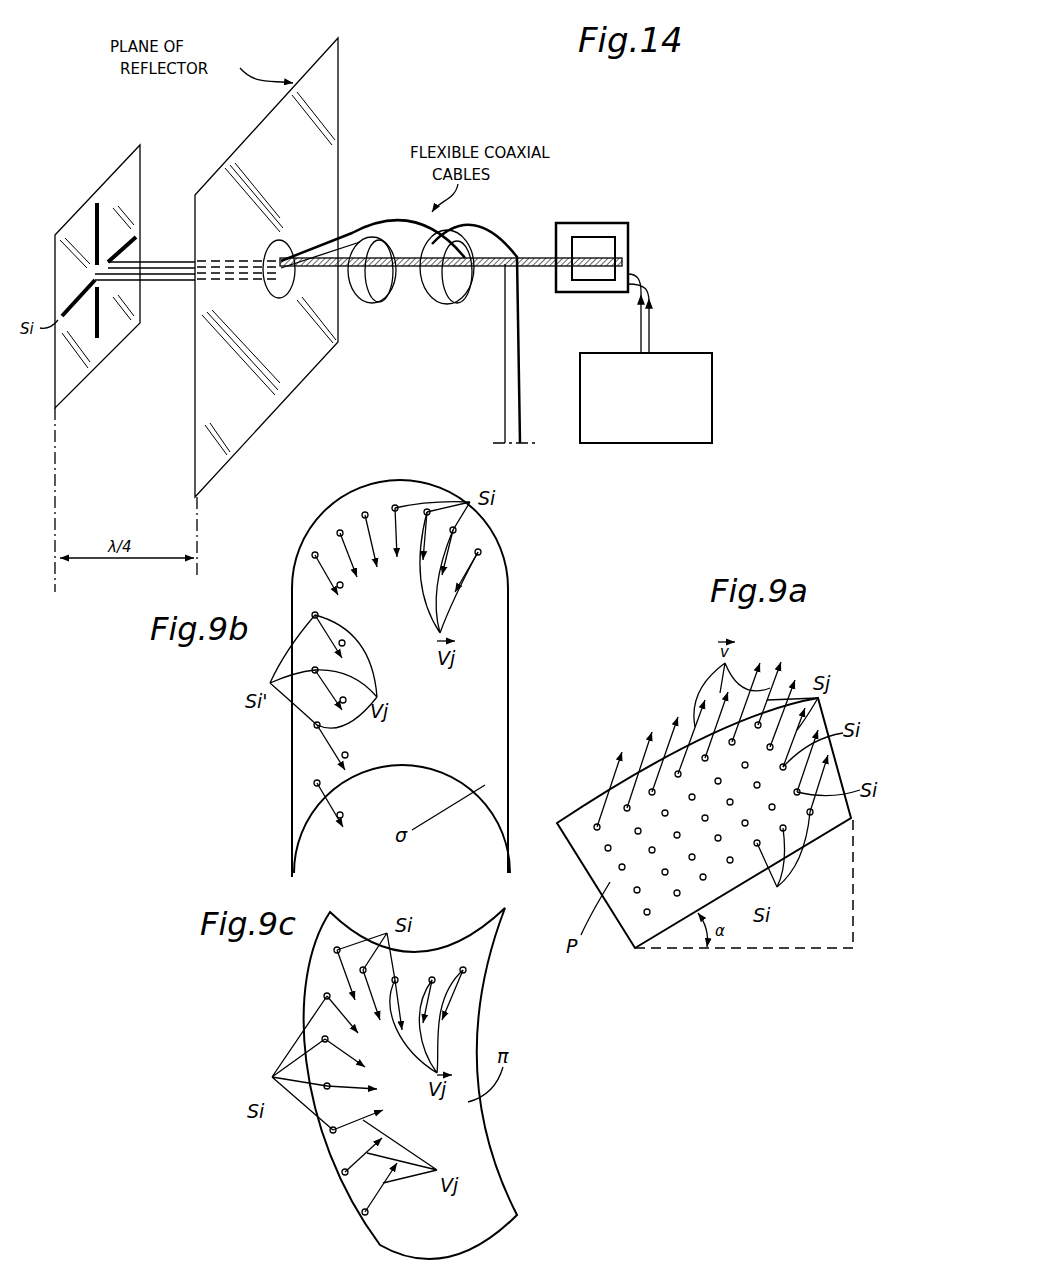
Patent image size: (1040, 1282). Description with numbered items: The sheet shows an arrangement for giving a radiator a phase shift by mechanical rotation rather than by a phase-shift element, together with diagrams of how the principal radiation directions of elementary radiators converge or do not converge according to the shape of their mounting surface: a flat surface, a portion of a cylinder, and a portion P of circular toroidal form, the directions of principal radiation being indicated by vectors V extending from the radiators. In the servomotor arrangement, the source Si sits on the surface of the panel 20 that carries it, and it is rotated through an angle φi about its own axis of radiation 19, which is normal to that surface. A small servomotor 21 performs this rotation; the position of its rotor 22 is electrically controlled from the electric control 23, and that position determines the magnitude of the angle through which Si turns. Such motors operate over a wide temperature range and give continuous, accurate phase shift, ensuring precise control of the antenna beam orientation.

The axis of radiation 19 is at (303, 262).
The panel 20 is at (116, 168).
The servomotor 21 is at (583, 223).
The rotor 22 is at (597, 284).
The electric control 23 is at (684, 354).